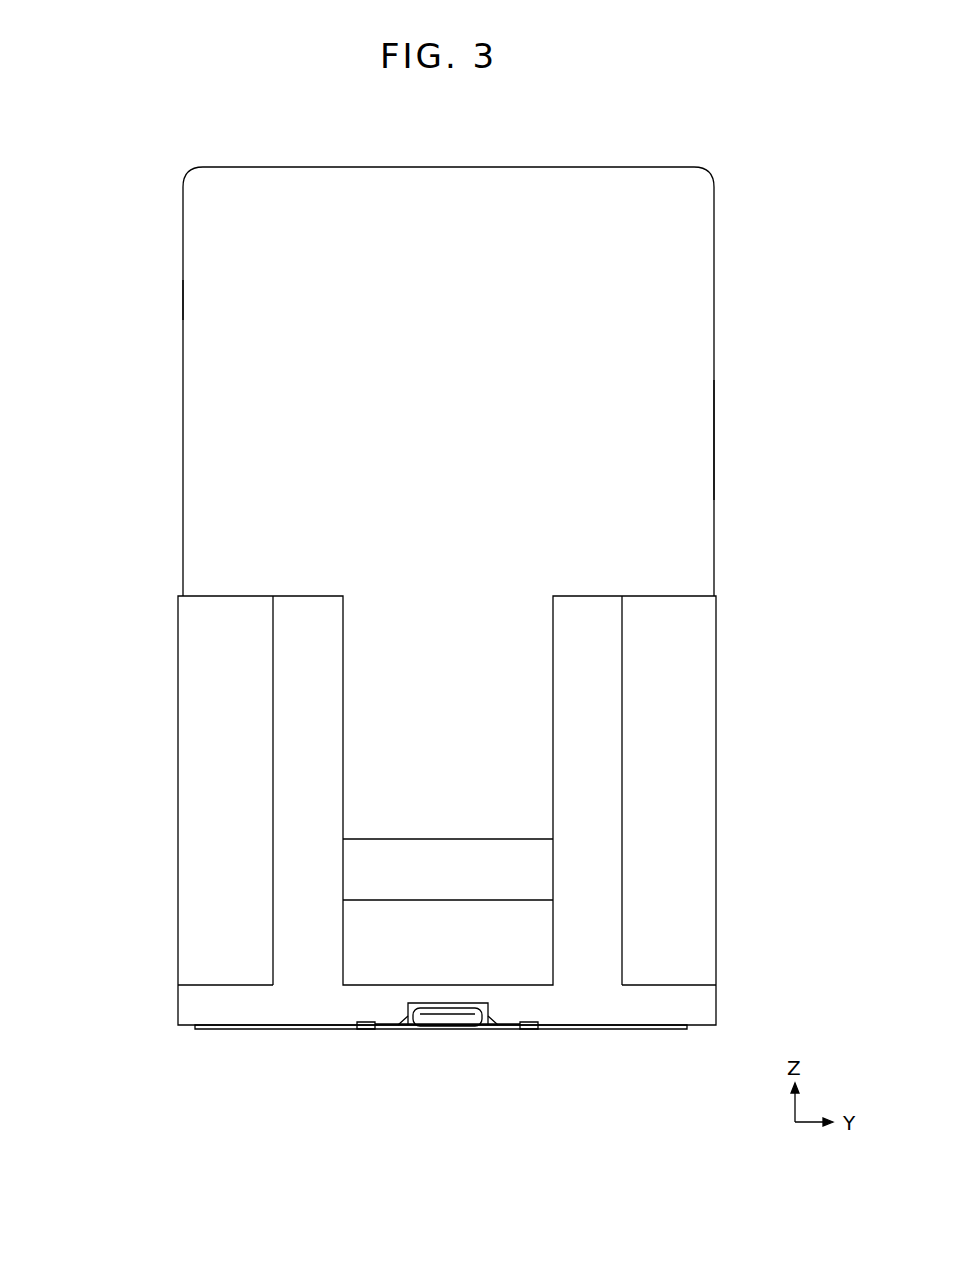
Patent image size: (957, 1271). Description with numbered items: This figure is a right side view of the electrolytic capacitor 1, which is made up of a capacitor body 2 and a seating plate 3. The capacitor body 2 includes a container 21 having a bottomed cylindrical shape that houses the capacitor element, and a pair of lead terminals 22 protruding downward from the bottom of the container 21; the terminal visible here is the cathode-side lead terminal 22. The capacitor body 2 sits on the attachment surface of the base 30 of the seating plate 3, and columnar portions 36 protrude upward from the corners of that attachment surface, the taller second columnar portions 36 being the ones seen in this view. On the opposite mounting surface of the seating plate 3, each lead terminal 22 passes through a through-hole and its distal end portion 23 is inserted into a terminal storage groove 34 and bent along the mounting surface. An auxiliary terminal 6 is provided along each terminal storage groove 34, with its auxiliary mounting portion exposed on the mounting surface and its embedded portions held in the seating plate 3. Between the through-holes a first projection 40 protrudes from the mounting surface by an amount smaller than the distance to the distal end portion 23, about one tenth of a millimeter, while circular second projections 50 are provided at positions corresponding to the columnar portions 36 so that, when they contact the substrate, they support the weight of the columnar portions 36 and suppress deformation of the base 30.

The electrolytic capacitor 1 is at (173, 300).
The capacitor body 2 is at (716, 299).
The container 21 is at (703, 488).
The seating plate 3 is at (718, 1001).
The base 30 is at (693, 1015).
The columnar portion 36 is at (200, 735).
The second projection 50 is at (258, 1030).
The first projection 40 is at (337, 1030).
The auxiliary terminal 6 is at (367, 1030).
The terminal storage groove 34 is at (413, 1003).
The distal end portion 23 is at (463, 1022).
The lead terminal 22 is at (435, 1025).